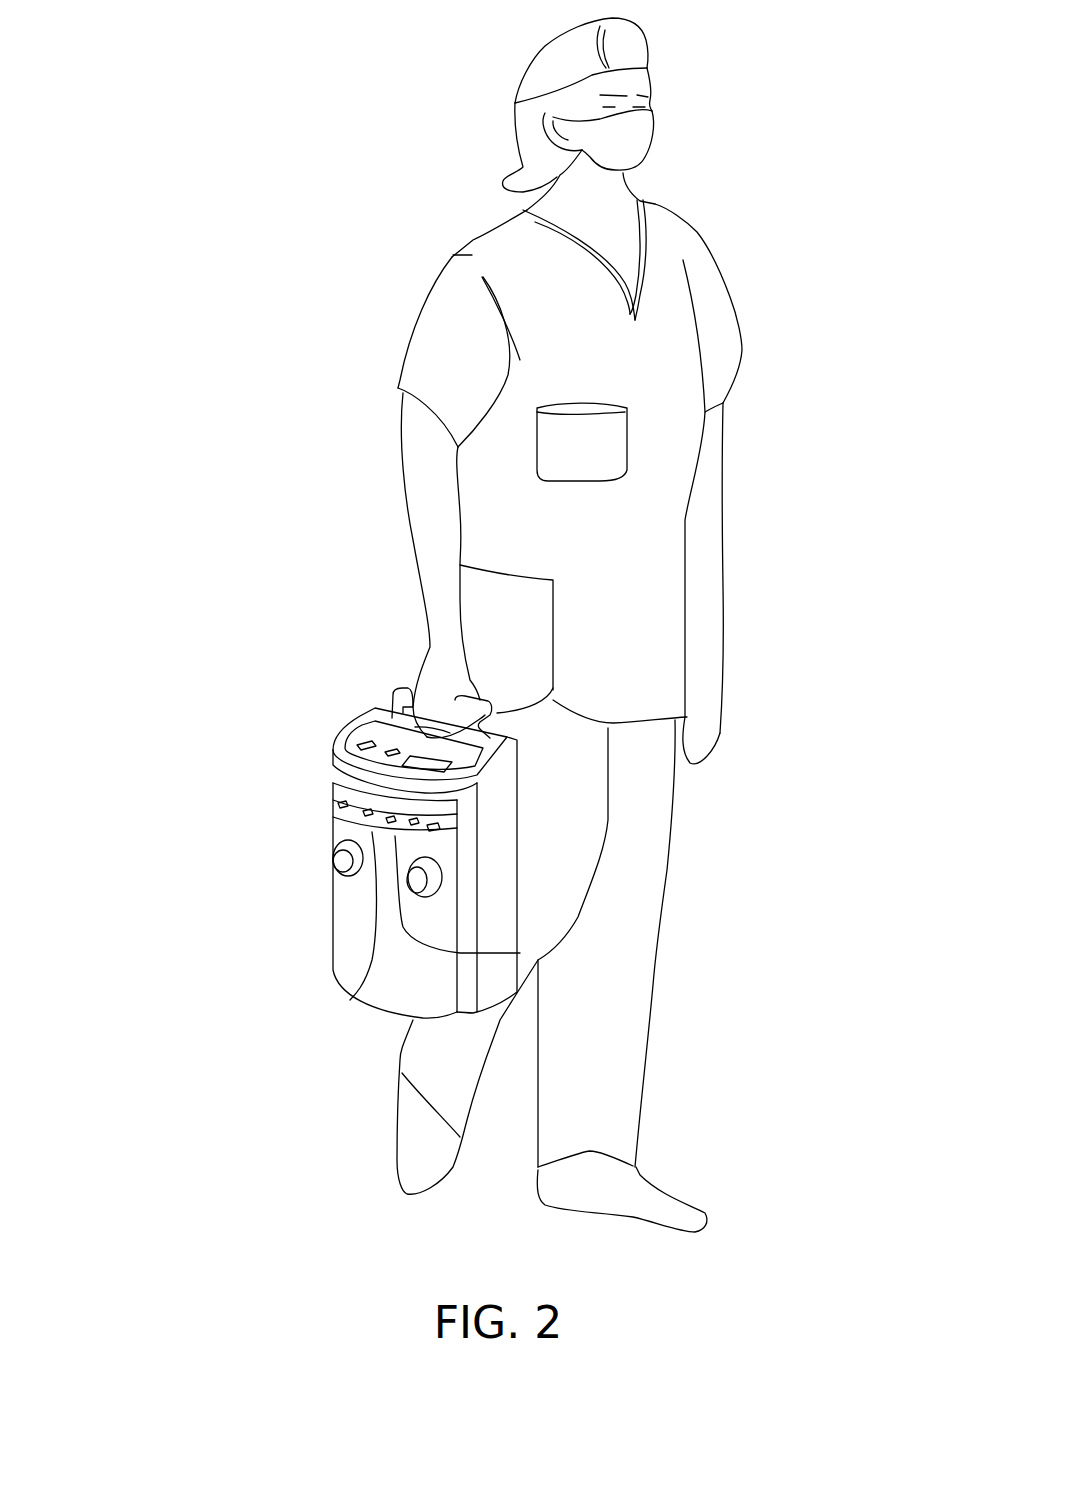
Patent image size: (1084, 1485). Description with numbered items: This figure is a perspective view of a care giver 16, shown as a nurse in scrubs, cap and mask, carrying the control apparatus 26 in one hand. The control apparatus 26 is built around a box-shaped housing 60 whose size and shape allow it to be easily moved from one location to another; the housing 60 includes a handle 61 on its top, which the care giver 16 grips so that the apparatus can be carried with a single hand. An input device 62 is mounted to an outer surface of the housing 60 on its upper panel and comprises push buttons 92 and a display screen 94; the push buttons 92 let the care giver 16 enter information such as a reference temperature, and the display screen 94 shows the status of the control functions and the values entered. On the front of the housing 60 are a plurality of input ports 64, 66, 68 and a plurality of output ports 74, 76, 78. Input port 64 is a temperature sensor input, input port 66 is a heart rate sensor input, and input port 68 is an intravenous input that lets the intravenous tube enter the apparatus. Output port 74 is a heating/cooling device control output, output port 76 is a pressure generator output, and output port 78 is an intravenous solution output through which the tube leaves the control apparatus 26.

The care giver 16 is at (338, 230).
The control apparatus 26 is at (224, 993).
The housing 60 is at (318, 932).
The handle 61 is at (470, 723).
The input device 62 is at (362, 724).
The input port 64 is at (333, 827).
The input port 66 is at (520, 953).
The input port 68 is at (524, 796).
The output port 74 is at (372, 995).
The output port 76 is at (343, 867).
The output port 78 is at (342, 805).
The push buttons 92 is at (395, 749).
The display screen 94 is at (437, 760).